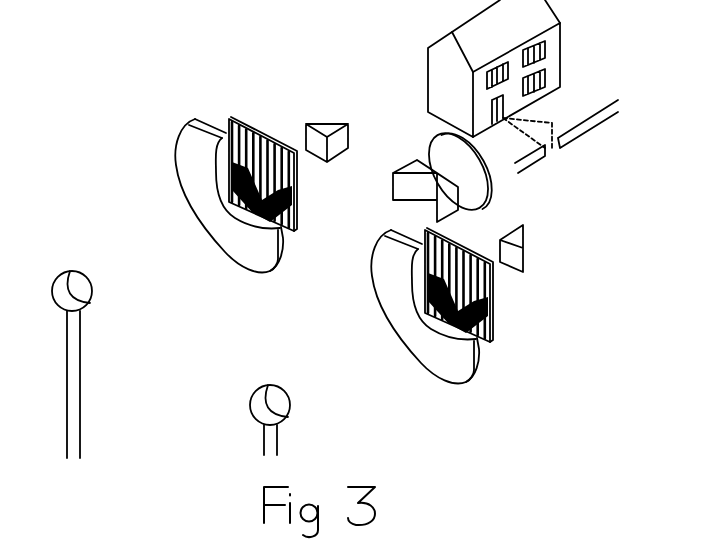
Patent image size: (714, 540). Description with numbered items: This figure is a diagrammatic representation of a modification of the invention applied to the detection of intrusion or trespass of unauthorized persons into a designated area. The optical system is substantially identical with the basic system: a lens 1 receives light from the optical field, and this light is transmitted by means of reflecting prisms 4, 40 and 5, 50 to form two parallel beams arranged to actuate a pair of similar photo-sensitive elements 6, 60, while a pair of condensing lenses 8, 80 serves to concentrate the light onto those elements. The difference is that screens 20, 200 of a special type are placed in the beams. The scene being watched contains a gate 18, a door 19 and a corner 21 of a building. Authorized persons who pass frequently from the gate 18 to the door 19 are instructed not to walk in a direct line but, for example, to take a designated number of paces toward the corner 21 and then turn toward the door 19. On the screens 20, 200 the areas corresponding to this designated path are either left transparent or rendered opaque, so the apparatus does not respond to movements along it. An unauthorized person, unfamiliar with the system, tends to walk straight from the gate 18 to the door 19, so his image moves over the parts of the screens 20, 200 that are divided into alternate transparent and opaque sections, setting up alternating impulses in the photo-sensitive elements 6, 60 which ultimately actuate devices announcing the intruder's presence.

The lens 1 is at (439, 179).
The reflecting prism 4 is at (417, 191).
The reflecting prism 5 is at (336, 143).
The photo-sensitive element 6 is at (62, 364).
The condensing lens 8 is at (227, 195).
The gate 18 is at (552, 150).
The door 19 is at (489, 115).
The screen 20 is at (275, 174).
The corner 21 is at (566, 68).
The reflecting prism 40 is at (459, 179).
The reflecting prism 50 is at (522, 248).
The photo-sensitive element 60 is at (256, 420).
The condensing lens 80 is at (416, 306).
The screen 200 is at (476, 285).